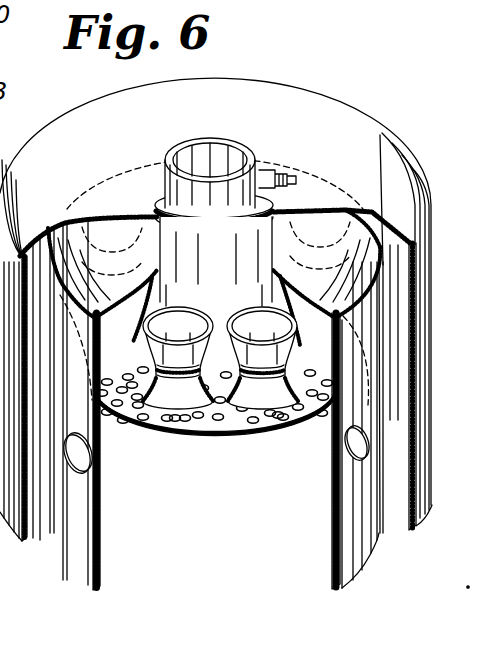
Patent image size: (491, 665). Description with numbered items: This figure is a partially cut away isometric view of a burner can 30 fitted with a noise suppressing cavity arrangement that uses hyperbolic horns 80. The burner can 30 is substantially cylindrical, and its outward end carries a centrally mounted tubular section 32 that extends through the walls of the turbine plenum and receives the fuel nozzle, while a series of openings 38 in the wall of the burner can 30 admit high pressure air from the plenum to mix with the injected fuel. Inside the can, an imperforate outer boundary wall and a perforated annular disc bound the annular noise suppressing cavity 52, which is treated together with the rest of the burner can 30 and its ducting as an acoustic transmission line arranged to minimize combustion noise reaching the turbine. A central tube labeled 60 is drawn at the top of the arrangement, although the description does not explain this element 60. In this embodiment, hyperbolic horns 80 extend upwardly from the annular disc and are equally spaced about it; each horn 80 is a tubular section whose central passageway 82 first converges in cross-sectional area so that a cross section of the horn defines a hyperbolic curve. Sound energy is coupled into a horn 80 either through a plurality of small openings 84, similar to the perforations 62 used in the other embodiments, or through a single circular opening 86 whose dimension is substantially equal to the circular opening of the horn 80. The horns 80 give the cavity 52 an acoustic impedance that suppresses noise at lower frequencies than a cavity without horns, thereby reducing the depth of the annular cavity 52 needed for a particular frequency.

The burner can 30 is at (90, 559).
The tubular section 32 is at (275, 205).
The openings 38 is at (82, 460).
The annular cavity 52 is at (304, 375).
The central inlet pipe 60 is at (227, 153).
The perforations 62 is at (137, 427).
The hyperbolic horn 80 is at (245, 307).
The central passageway 82 is at (176, 318).
The small openings 84 is at (175, 420).
The circular opening 86 is at (278, 415).